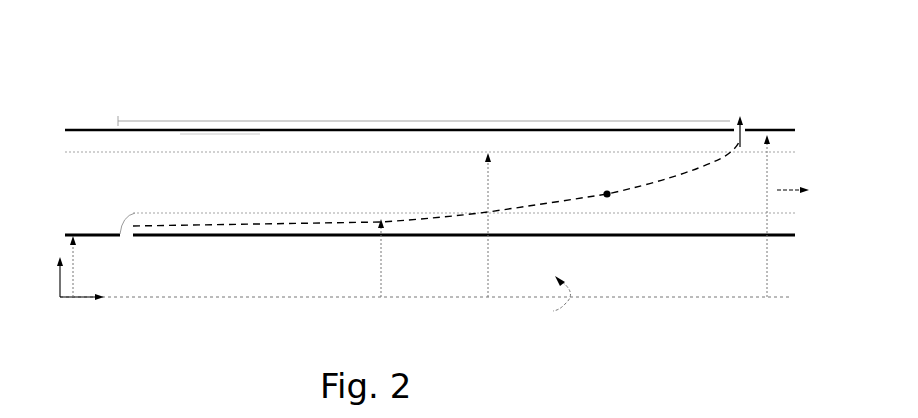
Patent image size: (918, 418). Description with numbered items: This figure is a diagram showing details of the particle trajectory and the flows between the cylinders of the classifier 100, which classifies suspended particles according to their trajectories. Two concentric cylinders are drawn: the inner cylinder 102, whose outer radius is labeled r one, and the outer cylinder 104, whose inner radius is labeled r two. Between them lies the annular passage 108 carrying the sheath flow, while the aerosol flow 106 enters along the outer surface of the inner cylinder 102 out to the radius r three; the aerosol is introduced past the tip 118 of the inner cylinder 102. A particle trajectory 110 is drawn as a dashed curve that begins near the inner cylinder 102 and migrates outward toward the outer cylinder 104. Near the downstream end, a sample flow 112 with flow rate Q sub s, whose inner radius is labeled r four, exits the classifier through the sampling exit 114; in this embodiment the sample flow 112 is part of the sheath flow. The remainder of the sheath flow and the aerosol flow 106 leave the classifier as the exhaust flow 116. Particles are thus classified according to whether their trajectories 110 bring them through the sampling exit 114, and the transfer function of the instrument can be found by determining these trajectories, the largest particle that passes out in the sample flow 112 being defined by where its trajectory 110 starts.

The spinneret / nozzle assembly 100 is at (378, 62).
The inner tube 102 is at (638, 237).
The outer tube wall 104 is at (558, 129).
The inner tube outer surface 106 is at (707, 224).
The annular passage 108 is at (130, 177).
The fluid trajectory 110 is at (252, 212).
The sample flow 112 is at (216, 140).
The sampling exit 114 is at (732, 128).
The exhaust flow 116 is at (782, 178).
The inner tube tip 118 is at (125, 238).